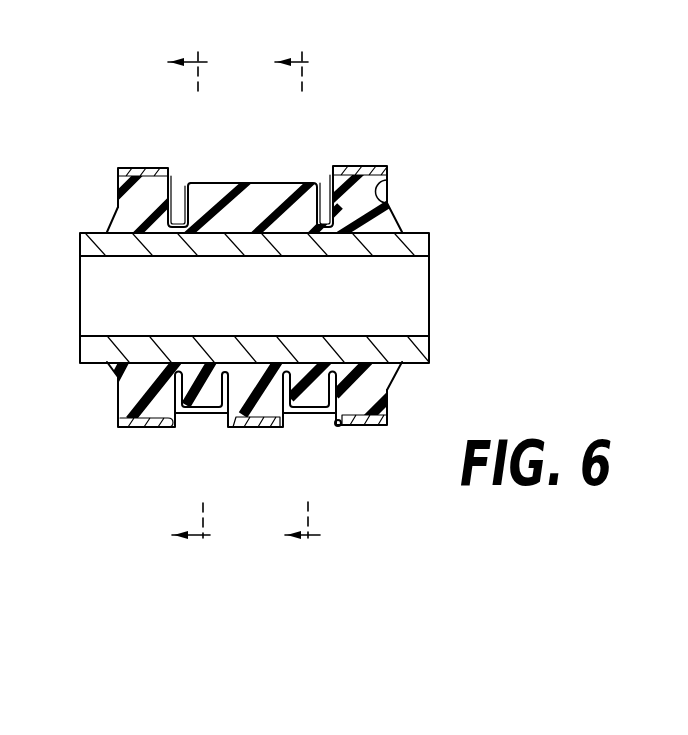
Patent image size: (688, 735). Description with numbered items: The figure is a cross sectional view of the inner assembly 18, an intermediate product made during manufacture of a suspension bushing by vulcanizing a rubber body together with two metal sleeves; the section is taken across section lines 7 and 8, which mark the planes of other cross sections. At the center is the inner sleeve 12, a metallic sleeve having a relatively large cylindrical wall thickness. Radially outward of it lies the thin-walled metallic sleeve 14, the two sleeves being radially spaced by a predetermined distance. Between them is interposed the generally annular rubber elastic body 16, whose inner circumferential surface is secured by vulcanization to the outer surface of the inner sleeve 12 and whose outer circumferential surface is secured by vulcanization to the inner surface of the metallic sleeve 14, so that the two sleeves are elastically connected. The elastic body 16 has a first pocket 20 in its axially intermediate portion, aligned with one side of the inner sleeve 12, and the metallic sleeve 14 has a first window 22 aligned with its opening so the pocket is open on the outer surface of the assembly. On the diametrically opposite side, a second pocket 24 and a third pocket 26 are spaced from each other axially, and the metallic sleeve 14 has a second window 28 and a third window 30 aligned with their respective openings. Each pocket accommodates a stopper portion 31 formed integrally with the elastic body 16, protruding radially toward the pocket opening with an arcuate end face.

The section line 7- 7 is at (193, 303).
The section line 8- 8 is at (302, 302).
The inner sleeve 12 is at (408, 352).
The metallic sleeve 14 is at (368, 424).
The elastic body 16 is at (130, 212).
The inner assembly 18 is at (279, 283).
The first pocket 20 is at (330, 181).
The first window 22 is at (178, 170).
The second pocket 24 is at (177, 418).
The third pocket 26 is at (333, 407).
The second window 28 is at (176, 425).
The third window 30 is at (338, 426).
The stopper portion 31 is at (302, 400).